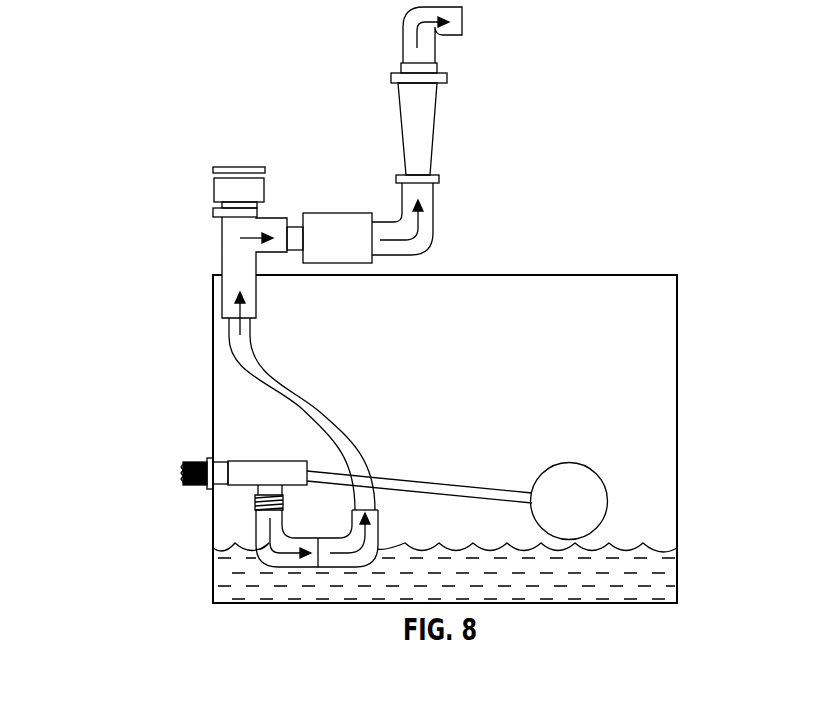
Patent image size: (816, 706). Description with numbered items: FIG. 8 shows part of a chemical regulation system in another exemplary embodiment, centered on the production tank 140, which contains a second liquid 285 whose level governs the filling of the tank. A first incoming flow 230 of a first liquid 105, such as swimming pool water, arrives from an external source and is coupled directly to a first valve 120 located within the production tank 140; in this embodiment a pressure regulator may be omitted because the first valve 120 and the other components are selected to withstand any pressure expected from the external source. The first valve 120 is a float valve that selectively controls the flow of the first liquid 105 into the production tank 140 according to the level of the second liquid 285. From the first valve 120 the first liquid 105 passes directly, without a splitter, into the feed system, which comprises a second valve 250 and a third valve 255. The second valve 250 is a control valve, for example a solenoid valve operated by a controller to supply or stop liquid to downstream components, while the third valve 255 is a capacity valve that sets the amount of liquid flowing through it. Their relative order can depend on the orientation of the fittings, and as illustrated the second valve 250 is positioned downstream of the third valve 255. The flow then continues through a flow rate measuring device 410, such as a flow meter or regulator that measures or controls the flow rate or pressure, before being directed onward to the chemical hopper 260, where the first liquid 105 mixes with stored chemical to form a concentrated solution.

The first liquid 105 is at (122, 464).
The first incoming flow 230 is at (170, 473).
The first valve 120 is at (290, 468).
The production tank 140 is at (677, 328).
The second valve 250 is at (328, 222).
The third valve 255 is at (240, 187).
The chemical hopper 260 is at (472, 23).
The second liquid 285 is at (665, 567).
The flow rate measuring device 410 is at (428, 120).